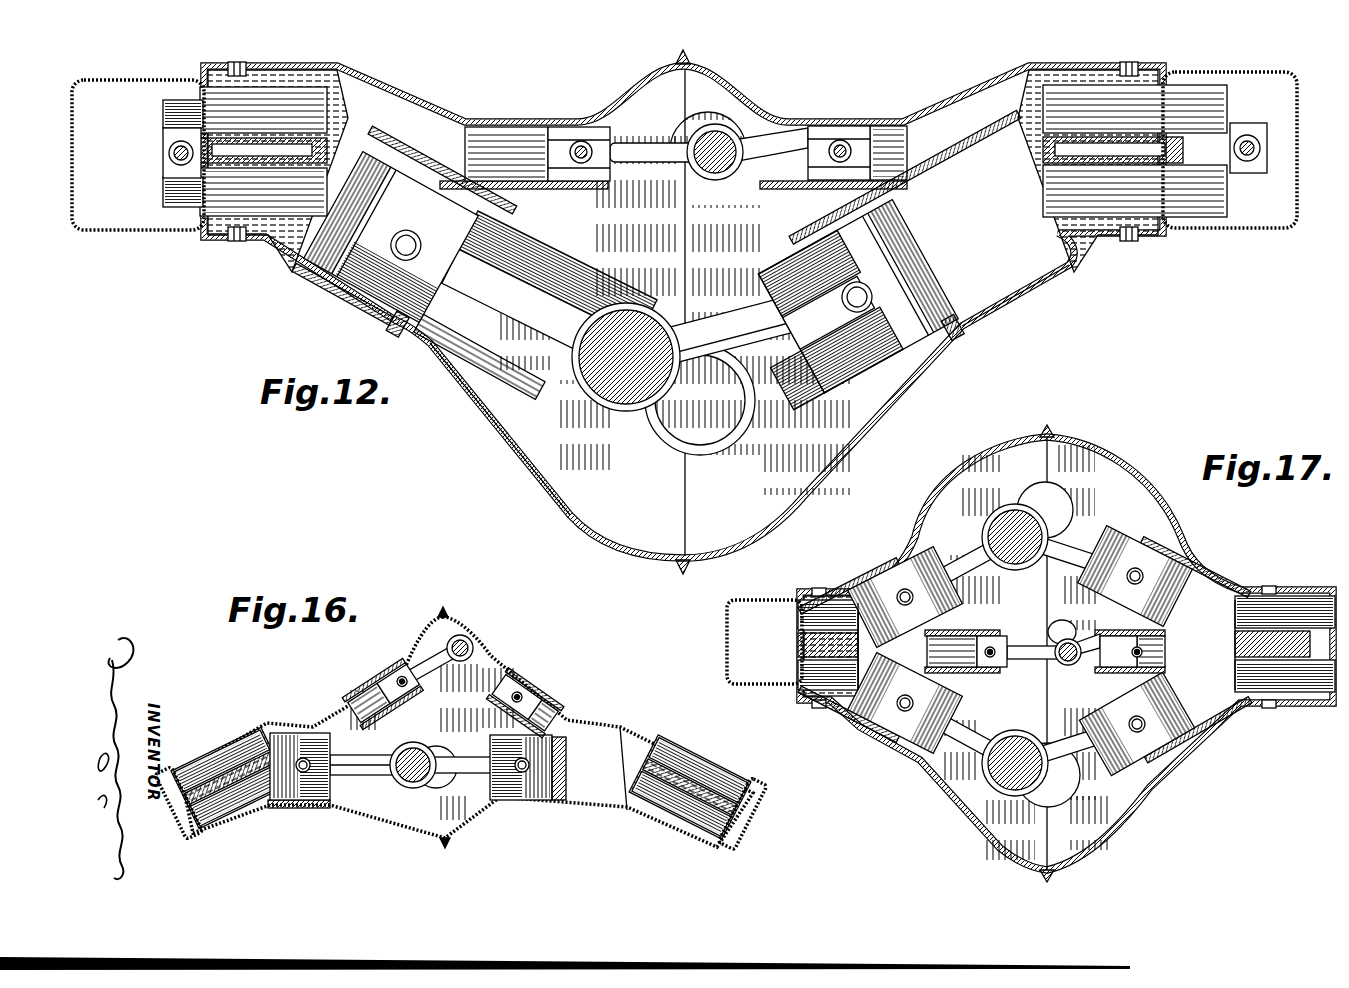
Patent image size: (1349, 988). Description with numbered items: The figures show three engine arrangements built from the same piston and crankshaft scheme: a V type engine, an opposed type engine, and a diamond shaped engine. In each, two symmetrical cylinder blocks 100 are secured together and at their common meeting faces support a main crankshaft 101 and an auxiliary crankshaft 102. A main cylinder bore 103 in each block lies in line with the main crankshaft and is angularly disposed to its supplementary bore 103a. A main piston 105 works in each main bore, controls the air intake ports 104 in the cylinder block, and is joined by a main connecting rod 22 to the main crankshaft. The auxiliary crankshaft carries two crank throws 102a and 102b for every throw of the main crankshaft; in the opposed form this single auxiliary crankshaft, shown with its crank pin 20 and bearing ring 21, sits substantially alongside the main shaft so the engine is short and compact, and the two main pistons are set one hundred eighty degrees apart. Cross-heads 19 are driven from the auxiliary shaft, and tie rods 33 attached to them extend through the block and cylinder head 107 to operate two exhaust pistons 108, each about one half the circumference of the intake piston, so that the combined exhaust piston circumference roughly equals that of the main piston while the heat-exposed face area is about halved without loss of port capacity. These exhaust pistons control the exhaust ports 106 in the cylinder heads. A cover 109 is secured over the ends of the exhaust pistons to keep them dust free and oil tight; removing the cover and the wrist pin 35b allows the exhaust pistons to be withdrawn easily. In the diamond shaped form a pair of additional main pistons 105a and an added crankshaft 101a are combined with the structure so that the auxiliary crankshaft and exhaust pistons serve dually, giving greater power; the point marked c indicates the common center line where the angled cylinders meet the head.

In FIG. 12, the cross-head 19 is at (568, 130).
In FIG. 16, the cross-head 19 is at (398, 675).
In FIG. 17, the cross-head 19 is at (1117, 622).
In FIG. 12, the short connecting rod 20 is at (637, 143).
In FIG. 16, the short connecting rod 20 is at (455, 645).
In FIG. 17, the short connecting rod 20 is at (1082, 665).
In FIG. 16, the auxiliary crankshaft 21 is at (477, 652).
In FIG. 12, the main connecting rod 22 is at (490, 288).
In FIG. 16, the main connecting rod 22 is at (378, 790).
In FIG. 17, the main connecting rod 22 is at (965, 575).
In FIG. 12, the tie rod 33 is at (505, 147).
In FIG. 16, the tie rod 33 is at (382, 697).
In FIG. 17, the tie rod 33 is at (1046, 651).
In FIG. 12, the wrist pin 35b is at (162, 153).
In FIG. 12, the cylinder block 100 is at (398, 130).
In FIG. 12, the main crankshaft 101 is at (693, 413).
In FIG. 16, the main crankshaft 101 is at (412, 780).
In FIG. 17, the main crankshaft 101 is at (1060, 790).
In FIG. 17, the crankshaft 101a is at (1035, 505).
In FIG. 12, the auxiliary crankshaft 102 is at (673, 177).
In FIG. 17, the auxiliary crankshaft 102 is at (1042, 662).
In FIG. 12, the crank throw 102a is at (736, 163).
In FIG. 12, the crank throw 102b is at (710, 100).
In FIG. 12, the main cylinder bore 103 is at (1033, 303).
In FIG. 12, the supplementary bore 103a is at (497, 377).
In FIG. 12, the air intake port 104 is at (397, 327).
In FIG. 16, the air intake port 104 is at (567, 807).
In FIG. 12, the main piston 105 is at (327, 283).
In FIG. 16, the main piston 105 is at (320, 808).
In FIG. 17, the main piston 105 is at (877, 740).
In FIG. 17, the main piston 105a is at (875, 575).
In FIG. 12, the exhaust port 106 is at (237, 243).
In FIG. 16, the exhaust port 106 is at (252, 812).
In FIG. 17, the exhaust port 106 is at (820, 588).
In FIG. 12, the cylinder head 107 is at (333, 70).
In FIG. 12, the exhaust piston 108 is at (695, 151).
In FIG. 16, the exhaust piston 108 is at (225, 752).
In FIG. 17, the exhaust piston 108 is at (823, 703).
In FIG. 12, the cover 109 is at (165, 230).
In FIG. 16, the cover 109 is at (735, 825).
In FIG. 17, the cover 109 is at (727, 648).
In FIG. 16, the center point c is at (632, 742).
In FIG. 17, the center point c is at (1046, 645).